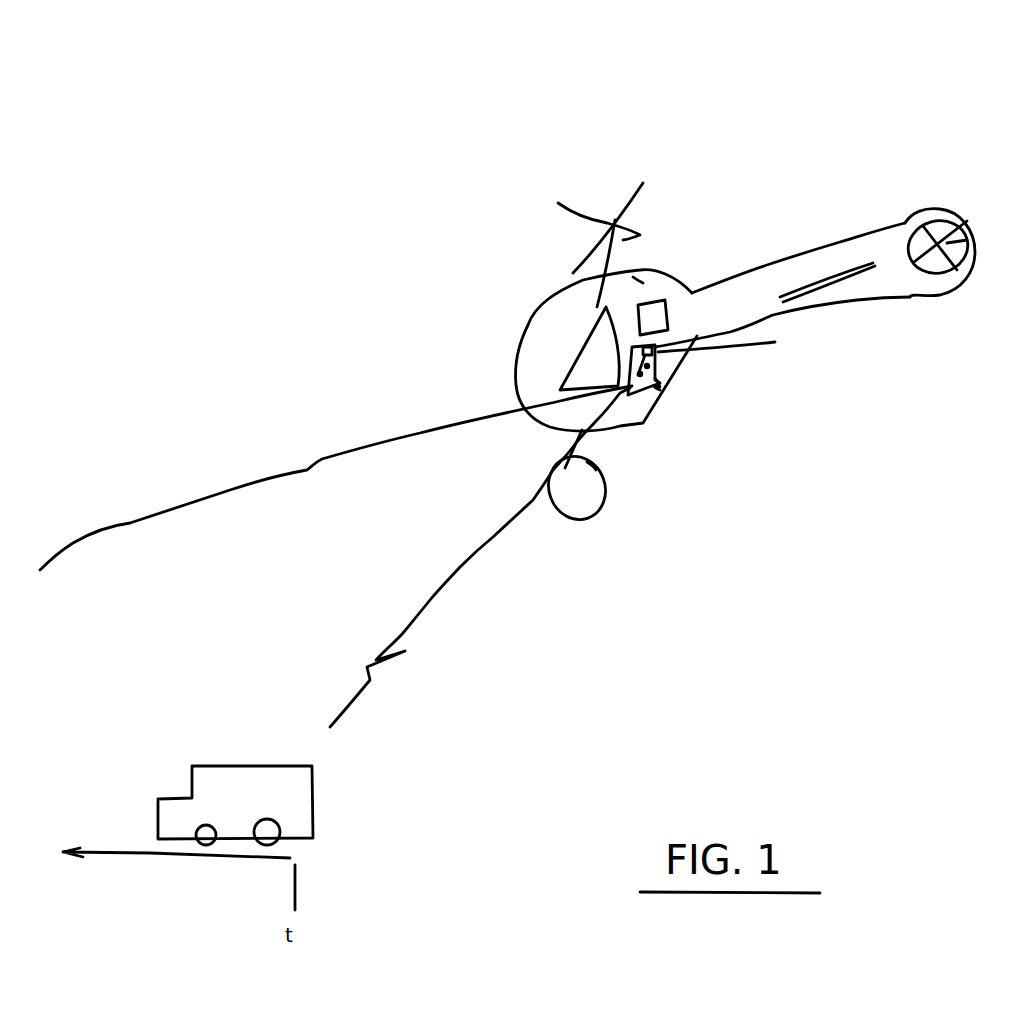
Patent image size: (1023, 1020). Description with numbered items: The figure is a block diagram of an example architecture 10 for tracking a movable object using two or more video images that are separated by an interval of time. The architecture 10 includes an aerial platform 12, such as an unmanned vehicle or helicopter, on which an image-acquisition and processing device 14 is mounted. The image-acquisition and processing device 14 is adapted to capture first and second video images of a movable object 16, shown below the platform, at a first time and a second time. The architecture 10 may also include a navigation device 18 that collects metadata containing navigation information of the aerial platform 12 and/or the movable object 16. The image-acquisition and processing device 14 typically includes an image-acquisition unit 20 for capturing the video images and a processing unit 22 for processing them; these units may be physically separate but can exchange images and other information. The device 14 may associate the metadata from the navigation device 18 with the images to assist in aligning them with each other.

The architecture 10 is at (445, 133).
The aerial platform 12 is at (770, 262).
The image-acquisition and processing device 14 is at (660, 390).
The movable object 16 is at (295, 813).
The navigation device 18 is at (660, 315).
The image-acquisition unit 20 is at (655, 356).
The processing unit 22 is at (733, 337).